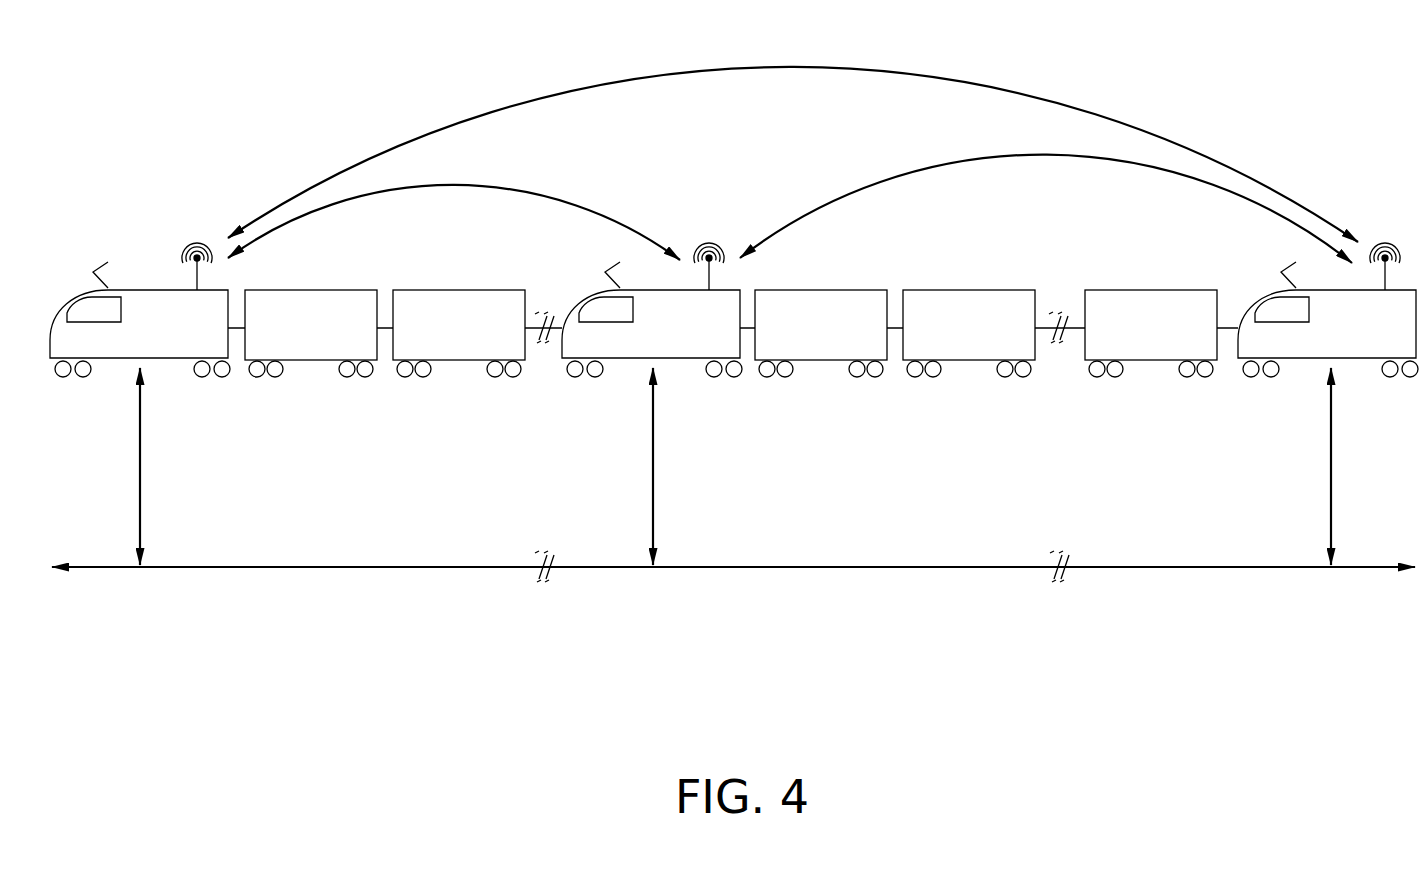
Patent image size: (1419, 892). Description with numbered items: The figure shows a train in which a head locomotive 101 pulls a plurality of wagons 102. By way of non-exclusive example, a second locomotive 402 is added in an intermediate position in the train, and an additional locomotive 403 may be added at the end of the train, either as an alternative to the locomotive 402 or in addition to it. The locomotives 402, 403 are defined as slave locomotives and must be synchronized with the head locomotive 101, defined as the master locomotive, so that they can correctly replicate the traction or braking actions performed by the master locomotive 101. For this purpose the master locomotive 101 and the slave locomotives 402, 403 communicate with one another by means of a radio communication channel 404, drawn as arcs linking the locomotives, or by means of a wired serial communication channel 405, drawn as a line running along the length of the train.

The locomotive 101 is at (172, 362).
The wagons 102 is at (328, 335).
The second locomotive 402 is at (683, 345).
The additional locomotive 403 is at (1313, 345).
The radio communication channel 404 is at (607, 213).
The wired serial communication channel 405 is at (718, 572).